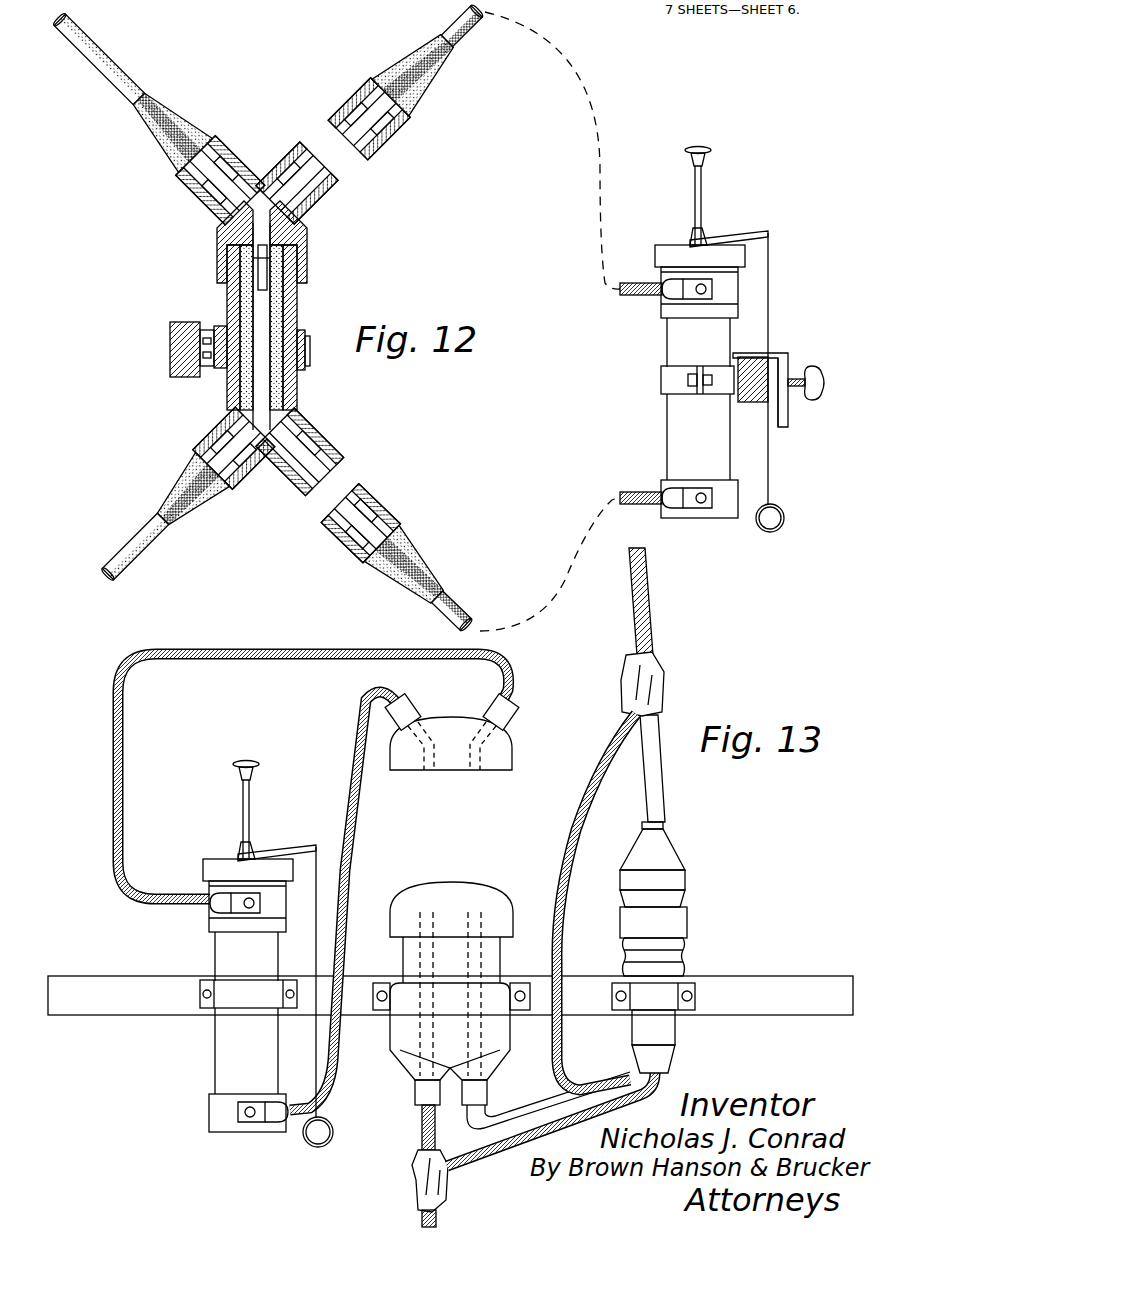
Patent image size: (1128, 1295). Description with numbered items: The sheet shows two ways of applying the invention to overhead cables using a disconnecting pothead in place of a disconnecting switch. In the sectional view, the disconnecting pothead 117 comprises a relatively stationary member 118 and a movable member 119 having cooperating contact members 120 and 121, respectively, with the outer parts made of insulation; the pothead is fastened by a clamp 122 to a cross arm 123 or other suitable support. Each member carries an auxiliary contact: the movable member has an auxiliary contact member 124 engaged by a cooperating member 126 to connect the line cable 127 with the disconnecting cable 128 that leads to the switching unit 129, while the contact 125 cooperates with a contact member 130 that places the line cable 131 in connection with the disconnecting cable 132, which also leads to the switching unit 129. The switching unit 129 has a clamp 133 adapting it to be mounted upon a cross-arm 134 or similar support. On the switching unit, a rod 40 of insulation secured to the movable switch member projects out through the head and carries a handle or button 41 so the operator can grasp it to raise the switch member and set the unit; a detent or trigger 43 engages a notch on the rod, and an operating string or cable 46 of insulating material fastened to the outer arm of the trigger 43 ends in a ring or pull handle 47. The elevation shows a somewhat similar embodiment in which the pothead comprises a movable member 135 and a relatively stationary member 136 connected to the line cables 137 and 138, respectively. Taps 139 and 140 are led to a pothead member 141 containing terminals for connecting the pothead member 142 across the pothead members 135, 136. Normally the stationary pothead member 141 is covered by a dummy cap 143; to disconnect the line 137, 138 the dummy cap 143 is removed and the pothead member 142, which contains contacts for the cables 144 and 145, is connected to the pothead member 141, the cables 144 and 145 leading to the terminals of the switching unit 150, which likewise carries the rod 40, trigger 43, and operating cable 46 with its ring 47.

In FIG. 12, the rod of insulation 40 is at (702, 190).
In FIG. 13, the rod of insulation 40 is at (244, 805).
In FIG. 12, the handle or button 41 is at (705, 150).
In FIG. 12, the detent or trigger 43 is at (760, 232).
In FIG. 13, the detent or trigger 43 is at (310, 845).
In FIG. 12, the operating string or cable 46 is at (770, 470).
In FIG. 12, the ring or pull handle 47 is at (784, 516).
In FIG. 12, the disconnecting pothead 117 is at (300, 384).
In FIG. 12, the relatively stationary member 118 is at (228, 296).
In FIG. 12, the movable member 119 is at (222, 224).
In FIG. 12, the contact member 120 is at (284, 303).
In FIG. 12, the contact member 121 is at (268, 262).
In FIG. 12, the clamp 122 is at (208, 366).
In FIG. 12, the cross arm 123 is at (172, 348).
In FIG. 12, the auxiliary contact member 124 is at (292, 150).
In FIG. 12, the contact 125 is at (300, 430).
In FIG. 12, the coöperating member 126 is at (345, 106).
In FIG. 12, the line cable 127 is at (112, 88).
In FIG. 12, the disconnecting cable 128 is at (458, 28).
In FIG. 12, the switching unit 129 is at (685, 333).
In FIG. 12, the contact member 130 is at (372, 495).
In FIG. 12, the line cable 131 is at (122, 560).
In FIG. 12, the disconnecting cable 132 is at (445, 600).
In FIG. 12, the clamp 133 is at (768, 358).
In FIG. 12, the cross-arm 134 is at (757, 380).
In FIG. 13, the movable member 135 is at (665, 858).
In FIG. 13, the relatively stationary member 136 is at (675, 918).
In FIG. 13, the line cable 137 is at (640, 614).
In FIG. 13, the line cable 138 is at (420, 1218).
In FIG. 13, the tap 139 is at (612, 745).
In FIG. 13, the tap 140 is at (422, 1112).
In FIG. 13, the pothead member 141 is at (405, 945).
In FIG. 13, the pothead member 142 is at (496, 760).
In FIG. 13, the dummy cap 143 is at (500, 872).
In FIG. 13, the cable 144 is at (300, 658).
In FIG. 13, the cable 145 is at (358, 829).
In FIG. 13, the switching unit 150 is at (218, 935).